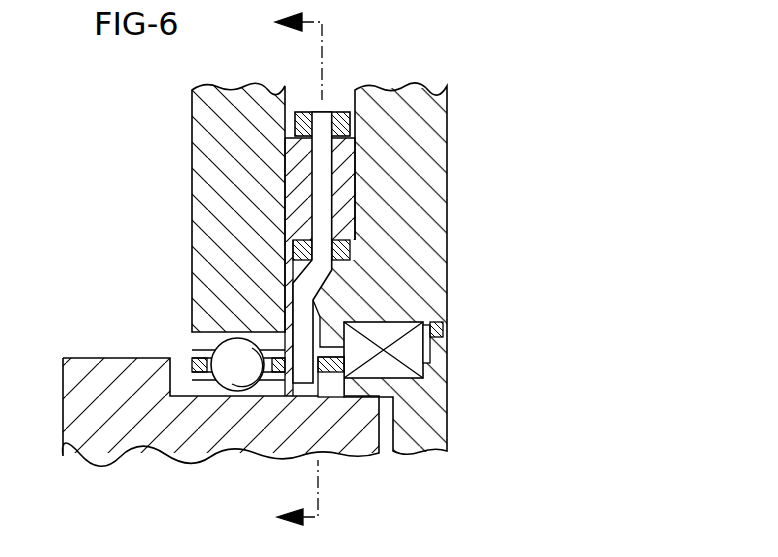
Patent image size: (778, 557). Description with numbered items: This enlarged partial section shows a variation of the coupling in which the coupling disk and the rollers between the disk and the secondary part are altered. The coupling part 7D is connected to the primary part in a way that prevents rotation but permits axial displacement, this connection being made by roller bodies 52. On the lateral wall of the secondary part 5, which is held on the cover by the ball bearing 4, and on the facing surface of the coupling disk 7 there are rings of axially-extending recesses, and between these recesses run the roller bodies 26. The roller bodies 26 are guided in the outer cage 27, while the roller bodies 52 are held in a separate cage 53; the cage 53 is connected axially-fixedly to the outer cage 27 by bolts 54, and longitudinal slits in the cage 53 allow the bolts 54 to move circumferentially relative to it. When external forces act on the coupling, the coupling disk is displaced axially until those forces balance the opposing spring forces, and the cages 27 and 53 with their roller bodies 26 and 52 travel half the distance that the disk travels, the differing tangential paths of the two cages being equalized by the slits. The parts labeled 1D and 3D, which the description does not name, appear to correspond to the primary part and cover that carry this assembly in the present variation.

The coupling disk 7 is at (289, 270).
The coupling part 7D is at (218, 130).
The secondary part 5 is at (437, 130).
The cage 27 is at (340, 112).
The roller bodies 26 is at (343, 197).
The bolts 54 is at (325, 271).
The ball bearing 4 is at (407, 345).
The cage 53 is at (190, 358).
The roller bodies 52 is at (224, 378).
The lower body member 3D is at (430, 411).
The base plate 1D is at (345, 442).